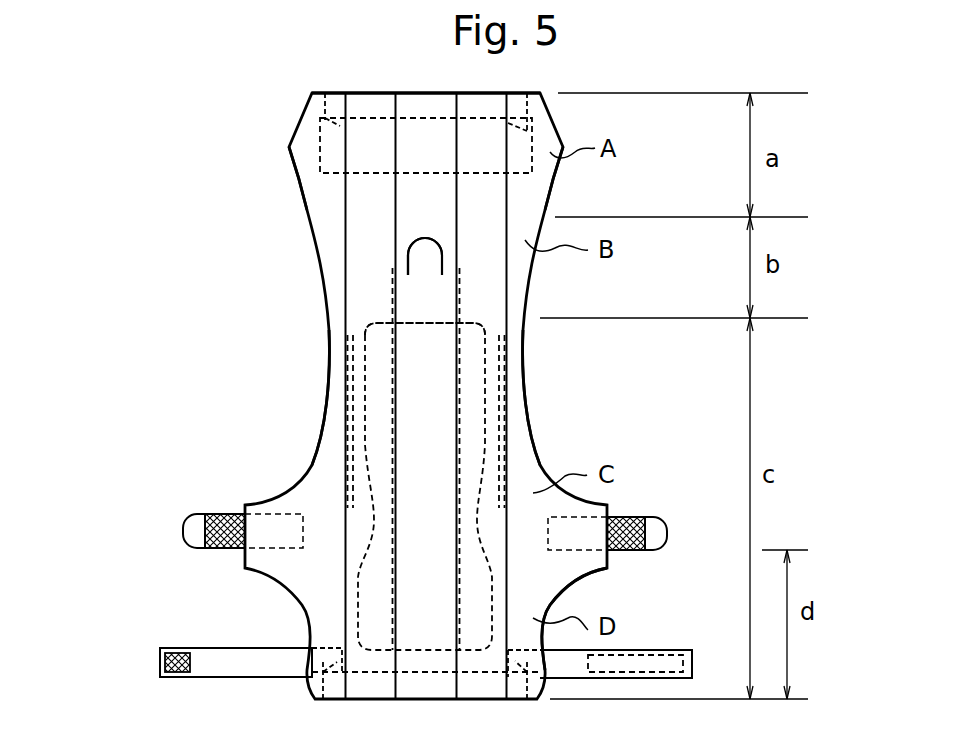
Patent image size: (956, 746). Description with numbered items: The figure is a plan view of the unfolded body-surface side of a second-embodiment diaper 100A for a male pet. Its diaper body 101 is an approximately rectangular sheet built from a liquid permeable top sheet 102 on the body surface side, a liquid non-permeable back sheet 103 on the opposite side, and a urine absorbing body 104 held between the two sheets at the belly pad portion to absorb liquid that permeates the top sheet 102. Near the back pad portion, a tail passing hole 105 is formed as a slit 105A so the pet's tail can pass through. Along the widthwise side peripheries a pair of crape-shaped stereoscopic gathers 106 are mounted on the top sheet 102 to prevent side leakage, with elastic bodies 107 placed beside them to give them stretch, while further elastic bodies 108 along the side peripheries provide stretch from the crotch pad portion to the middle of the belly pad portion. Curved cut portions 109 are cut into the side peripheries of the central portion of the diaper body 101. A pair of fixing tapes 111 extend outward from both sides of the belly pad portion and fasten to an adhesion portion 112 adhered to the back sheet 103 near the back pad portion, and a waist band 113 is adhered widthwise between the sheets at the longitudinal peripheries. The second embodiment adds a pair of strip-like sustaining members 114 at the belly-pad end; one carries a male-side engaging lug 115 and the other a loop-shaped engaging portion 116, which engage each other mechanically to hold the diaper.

The diaper for a male pet 100A is at (172, 157).
The diaper body 101 is at (515, 97).
The top sheet 102 is at (330, 197).
The back sheet 103 is at (527, 583).
The urine absorbing body 104 is at (427, 393).
The tail passing hole 105 is at (423, 258).
The slit 105A is at (408, 252).
The stereoscopic gathers 106 is at (363, 323).
The elastic bodies 107 is at (392, 370).
The elastic bodies 108 is at (347, 460).
The curved cut portions 109 is at (328, 365).
The fixing tapes 111 is at (196, 537).
The adhesion portion 112 is at (330, 158).
The waist band 113 is at (325, 113).
The sustaining members 114 is at (220, 655).
The male-side engaging lug 115 is at (163, 662).
The loop-shaped engaging portion 116 is at (650, 667).